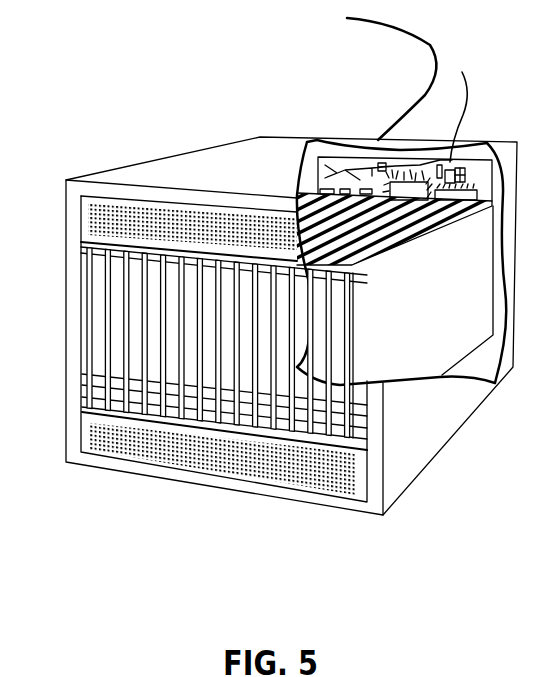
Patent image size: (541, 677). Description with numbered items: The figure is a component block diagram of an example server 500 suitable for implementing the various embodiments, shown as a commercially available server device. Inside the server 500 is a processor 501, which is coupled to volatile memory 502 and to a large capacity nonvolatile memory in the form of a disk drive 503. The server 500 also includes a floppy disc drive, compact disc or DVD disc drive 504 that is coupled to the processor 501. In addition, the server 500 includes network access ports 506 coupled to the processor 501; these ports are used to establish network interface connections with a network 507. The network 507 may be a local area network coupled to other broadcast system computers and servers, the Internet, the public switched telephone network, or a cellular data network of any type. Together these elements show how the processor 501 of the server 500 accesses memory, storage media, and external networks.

The server 500 is at (205, 148).
The processor 501 is at (410, 195).
The volatile memory 502 is at (472, 197).
The disk drive 503 is at (130, 298).
The disc drive 504 is at (314, 192).
The network access ports 506 is at (112, 323).
The network 507 is at (437, 62).